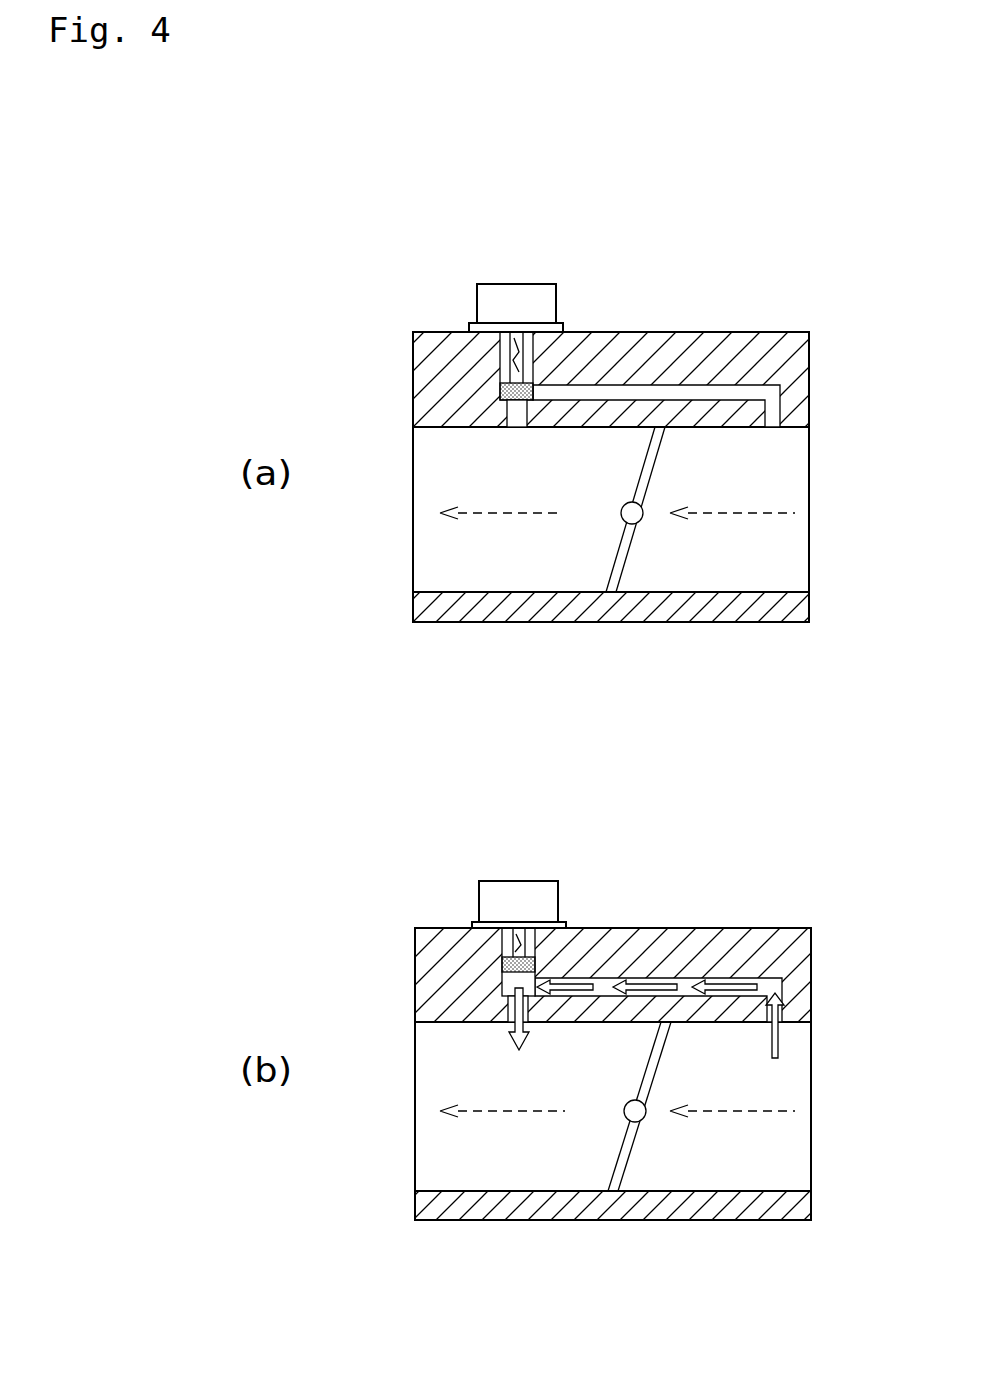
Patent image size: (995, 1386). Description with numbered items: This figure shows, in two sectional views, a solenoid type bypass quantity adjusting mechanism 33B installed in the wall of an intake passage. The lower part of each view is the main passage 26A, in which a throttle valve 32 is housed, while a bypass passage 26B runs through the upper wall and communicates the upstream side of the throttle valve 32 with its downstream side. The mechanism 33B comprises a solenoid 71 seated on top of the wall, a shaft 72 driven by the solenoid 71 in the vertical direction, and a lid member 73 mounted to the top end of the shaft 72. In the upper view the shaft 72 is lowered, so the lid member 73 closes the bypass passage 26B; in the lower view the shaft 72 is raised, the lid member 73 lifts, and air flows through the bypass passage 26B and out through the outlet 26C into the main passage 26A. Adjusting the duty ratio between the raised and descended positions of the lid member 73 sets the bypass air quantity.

The solenoid type bypass quantity adjusting mechanism 33B is at (490, 561).
The solenoid 71 is at (556, 303).
The shaft 72 is at (506, 368).
The lid member 73 is at (500, 394).
The main passage 26A is at (720, 582).
The bypass passage 26B is at (712, 390).
The discharge passage 26C is at (520, 428).
The throttle valve 32 is at (655, 469).